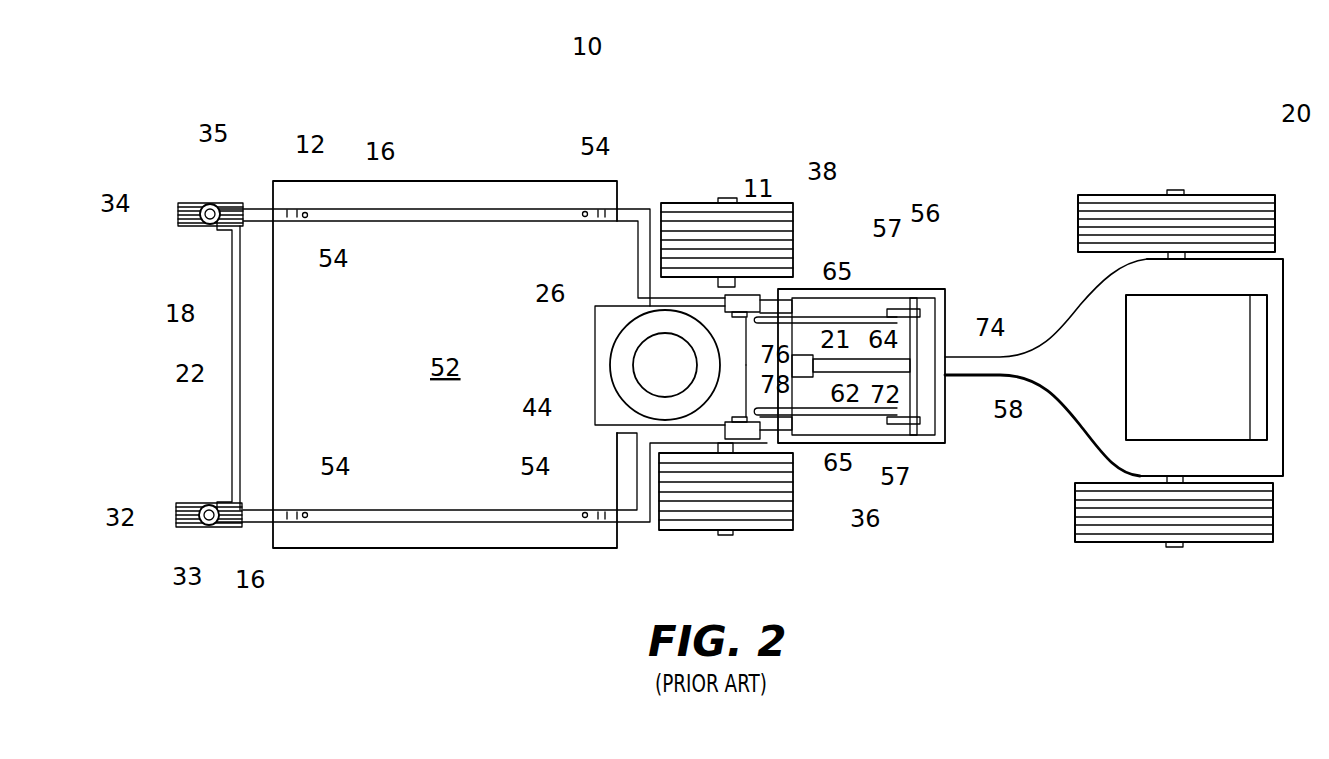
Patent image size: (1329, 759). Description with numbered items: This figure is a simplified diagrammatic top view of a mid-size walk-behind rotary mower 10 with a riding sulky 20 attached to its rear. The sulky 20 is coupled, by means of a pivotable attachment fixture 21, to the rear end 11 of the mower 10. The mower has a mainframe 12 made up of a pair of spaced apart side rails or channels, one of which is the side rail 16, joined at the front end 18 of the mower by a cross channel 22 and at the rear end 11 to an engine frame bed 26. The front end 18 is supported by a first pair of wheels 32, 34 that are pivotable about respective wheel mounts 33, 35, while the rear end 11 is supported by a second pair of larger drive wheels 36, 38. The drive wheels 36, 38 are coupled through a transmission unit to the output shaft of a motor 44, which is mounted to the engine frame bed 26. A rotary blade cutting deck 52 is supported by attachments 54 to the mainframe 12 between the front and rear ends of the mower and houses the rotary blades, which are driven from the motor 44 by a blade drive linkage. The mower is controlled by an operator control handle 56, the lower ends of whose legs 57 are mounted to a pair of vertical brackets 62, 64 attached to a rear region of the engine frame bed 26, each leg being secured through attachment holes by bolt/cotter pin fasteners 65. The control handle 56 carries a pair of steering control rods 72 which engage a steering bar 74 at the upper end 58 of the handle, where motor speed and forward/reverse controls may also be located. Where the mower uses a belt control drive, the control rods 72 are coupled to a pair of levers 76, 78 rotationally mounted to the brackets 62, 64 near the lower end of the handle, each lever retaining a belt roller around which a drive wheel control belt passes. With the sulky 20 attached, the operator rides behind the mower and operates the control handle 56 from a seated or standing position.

The walk-behind rotary mower 10 is at (568, 53).
The rear end 11 is at (768, 290).
The mainframe 12 is at (290, 150).
The side rail 16 is at (250, 565).
The front end 18 is at (232, 318).
The sulky 20 is at (1273, 123).
The pivotable attachment fixture 21 is at (805, 355).
The cross channel 22 is at (240, 375).
The engine frame bed 26 is at (617, 306).
The front wheel 32 is at (178, 515).
The caster pivot 33 is at (210, 527).
The front wheel 34 is at (178, 212).
The caster pivot 35 is at (210, 203).
The drive wheel 36 is at (795, 530).
The drive wheel 38 is at (776, 203).
The motor 44 is at (597, 403).
The rotary blade cutting deck 52 is at (445, 364).
The attachments 54 is at (595, 158).
The operator control handle 56 is at (922, 226).
The legs 57 is at (880, 240).
The upper end 58 is at (947, 408).
The vertical bracket 62 is at (792, 430).
The vertical bracket 64 is at (787, 303).
The bolt/cotter pin fasteners 65 is at (820, 463).
The steering control rods 72 is at (858, 408).
The steering bar 74 is at (913, 332).
The lever 76 is at (737, 318).
The lever 78 is at (737, 417).